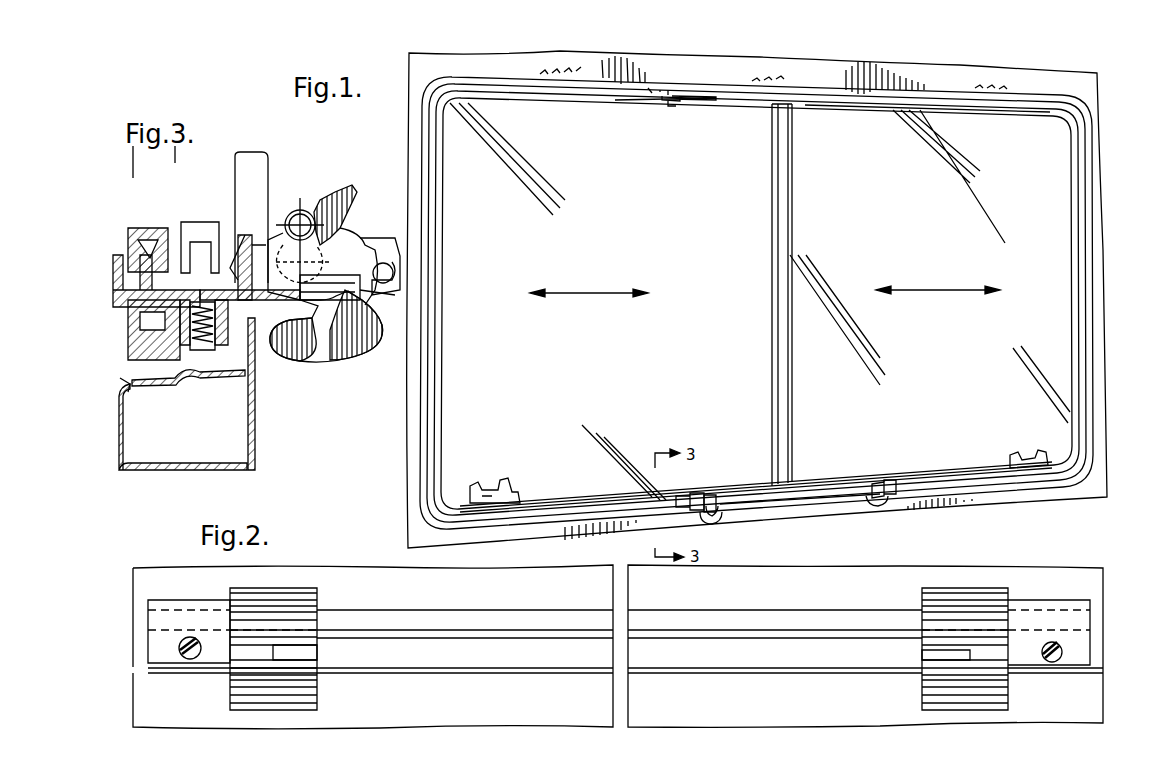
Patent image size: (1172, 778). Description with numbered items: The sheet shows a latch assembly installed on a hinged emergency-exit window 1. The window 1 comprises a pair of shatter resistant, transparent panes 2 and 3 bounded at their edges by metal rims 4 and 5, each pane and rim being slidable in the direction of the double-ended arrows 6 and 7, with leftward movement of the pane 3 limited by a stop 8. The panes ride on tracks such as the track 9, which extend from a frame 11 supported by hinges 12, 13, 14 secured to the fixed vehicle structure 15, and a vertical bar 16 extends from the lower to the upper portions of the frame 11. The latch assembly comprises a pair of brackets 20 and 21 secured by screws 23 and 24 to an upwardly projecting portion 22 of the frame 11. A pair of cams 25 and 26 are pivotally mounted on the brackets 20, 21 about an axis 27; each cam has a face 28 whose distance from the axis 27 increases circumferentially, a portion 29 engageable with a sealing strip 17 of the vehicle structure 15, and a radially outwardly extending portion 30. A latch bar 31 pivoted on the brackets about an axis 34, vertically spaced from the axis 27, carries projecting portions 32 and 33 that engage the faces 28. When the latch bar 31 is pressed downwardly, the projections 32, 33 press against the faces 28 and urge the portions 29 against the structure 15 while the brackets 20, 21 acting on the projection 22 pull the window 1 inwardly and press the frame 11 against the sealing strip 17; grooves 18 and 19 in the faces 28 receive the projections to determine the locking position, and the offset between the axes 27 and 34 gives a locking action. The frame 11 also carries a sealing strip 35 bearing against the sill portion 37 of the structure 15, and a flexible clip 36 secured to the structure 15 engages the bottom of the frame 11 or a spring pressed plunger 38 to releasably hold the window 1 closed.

In FIG. 1, the window 1 is at (1050, 274).
In FIG. 1, the transparent pane 2 is at (600, 349).
In FIG. 3, the transparent pane 2 is at (133, 227).
In FIG. 1, the transparent pane 3 is at (948, 343).
In FIG. 3, the transparent pane 3 is at (194, 222).
In FIG. 1, the metal rim 4 is at (624, 104).
In FIG. 1, the metal rim 5 is at (872, 110).
In FIG. 1, the double-ended arrow 6 is at (600, 290).
In FIG. 1, the double-ended arrow 7 is at (943, 288).
In FIG. 1, the stop 8 is at (675, 104).
In FIG. 3, the track 9 is at (152, 283).
In FIG. 1, the frame 11 is at (535, 502).
In FIG. 1, the hinge 12 is at (581, 69).
In FIG. 1, the hinge 13 is at (788, 77).
In FIG. 1, the hinge 14 is at (1010, 88).
In FIG. 1, the vehicle structure 15 is at (701, 80).
In FIG. 3, the vehicle structure 15 is at (255, 393).
In FIG. 1, the vertical bar 16 is at (782, 385).
In FIG. 3, the vertical bar 16 is at (268, 160).
In FIG. 1, the sealing strip 17 is at (552, 508).
In FIG. 3, the sealing strip 17 is at (255, 310).
In FIG. 2, the sealing strip 17 is at (469, 709).
In FIG. 3, the groove 18 is at (380, 262).
In FIG. 2, the groove 18 is at (230, 642).
In FIG. 3, the groove 19 is at (378, 300).
In FIG. 2, the groove 19 is at (240, 685).
In FIG. 1, the bracket 20 is at (690, 495).
In FIG. 2, the bracket 20 is at (194, 601).
In FIG. 1, the bracket 21 is at (888, 480).
In FIG. 2, the bracket 21 is at (1064, 608).
In FIG. 1, the upwardly projecting portion 22 is at (588, 510).
In FIG. 3, the upwardly projecting portion 22 is at (247, 235).
In FIG. 2, the screw 23 is at (188, 638).
In FIG. 2, the screw 24 is at (1051, 663).
In FIG. 1, the cam 25 is at (712, 520).
In FIG. 3, the cam 25 is at (340, 346).
In FIG. 2, the cam 25 is at (318, 592).
In FIG. 1, the cam 26 is at (885, 505).
In FIG. 2, the cam 26 is at (924, 587).
In FIG. 3, the axis 27 is at (288, 224).
In FIG. 3, the cam face 28 is at (350, 336).
In FIG. 3, the cam portion 29 is at (312, 326).
In FIG. 3, the radially outwardly extending portion 30 is at (350, 190).
In FIG. 1, the latch bar 31 is at (782, 505).
In FIG. 1, the projecting portion 32 is at (716, 498).
In FIG. 3, the projecting portion 32 is at (390, 262).
In FIG. 2, the projecting portion 32 is at (300, 652).
In FIG. 2, the projecting portion 33 is at (935, 657).
In FIG. 3, the axis 34 is at (292, 262).
In FIG. 3, the sealing strip 35 is at (160, 400).
In FIG. 3, the flexible clip 36 is at (200, 352).
In FIG. 3, the sill portion 37 is at (128, 393).
In FIG. 3, the spring pressed plunger 38 is at (222, 355).